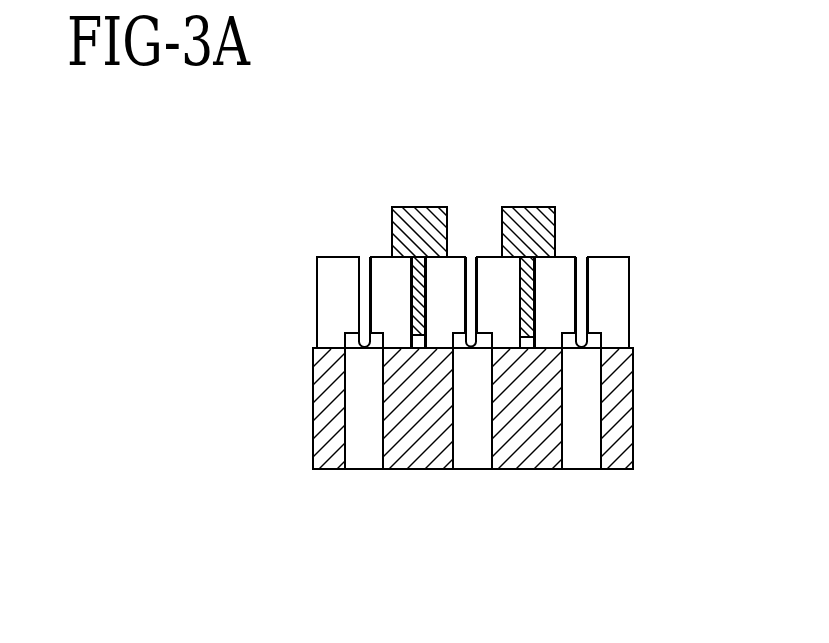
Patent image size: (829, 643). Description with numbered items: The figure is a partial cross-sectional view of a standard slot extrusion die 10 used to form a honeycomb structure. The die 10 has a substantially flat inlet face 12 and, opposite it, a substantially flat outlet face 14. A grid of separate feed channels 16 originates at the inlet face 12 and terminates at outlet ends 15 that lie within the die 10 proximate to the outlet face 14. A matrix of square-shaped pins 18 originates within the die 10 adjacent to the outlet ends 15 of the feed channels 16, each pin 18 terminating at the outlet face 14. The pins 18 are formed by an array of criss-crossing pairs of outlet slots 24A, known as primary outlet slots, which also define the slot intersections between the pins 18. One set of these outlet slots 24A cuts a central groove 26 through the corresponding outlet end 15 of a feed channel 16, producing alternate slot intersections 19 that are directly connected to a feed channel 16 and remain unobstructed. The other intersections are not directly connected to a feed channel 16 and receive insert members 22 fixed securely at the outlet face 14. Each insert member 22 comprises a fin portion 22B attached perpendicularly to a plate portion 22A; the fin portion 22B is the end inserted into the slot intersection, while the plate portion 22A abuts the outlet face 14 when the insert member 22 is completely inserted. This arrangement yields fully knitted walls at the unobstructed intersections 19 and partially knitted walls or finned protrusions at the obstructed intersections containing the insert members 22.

The extrusion die 10 is at (618, 495).
The inlet face 12 is at (330, 470).
The outlet face 14 is at (335, 256).
The outlet end 15 is at (457, 333).
The feed channel 16 is at (585, 437).
The pin 18 is at (328, 285).
The alternate slot intersection 19 is at (582, 292).
The insert member 22 is at (423, 206).
The plate portion 22A is at (533, 206).
The fin portion 22B is at (528, 290).
The outlet slot 24A is at (363, 258).
The central groove 26 is at (357, 350).